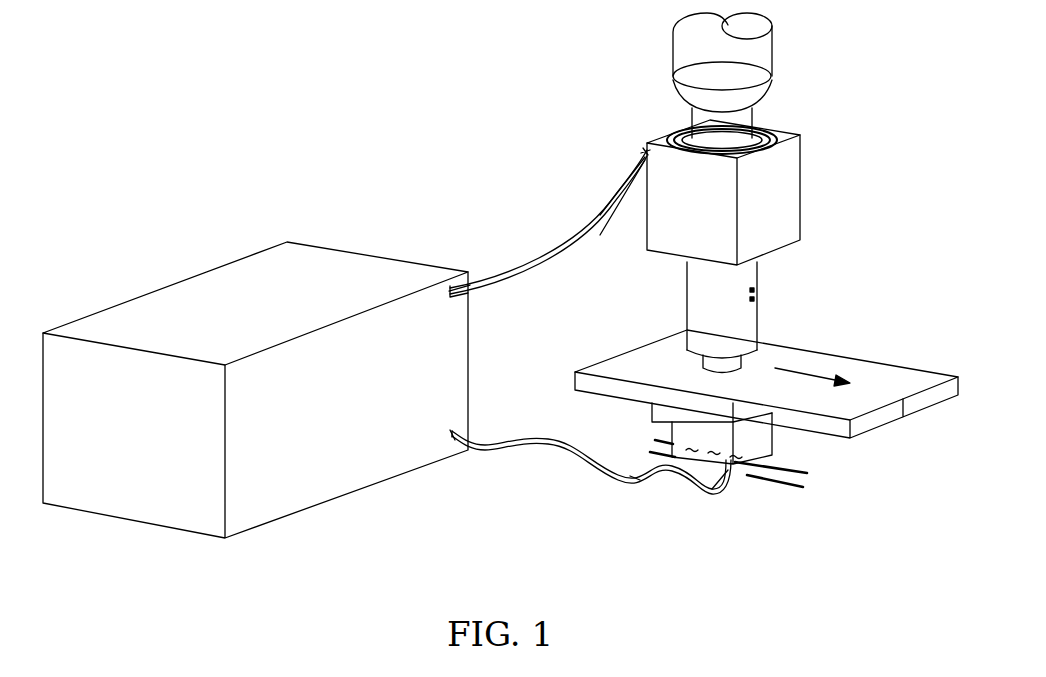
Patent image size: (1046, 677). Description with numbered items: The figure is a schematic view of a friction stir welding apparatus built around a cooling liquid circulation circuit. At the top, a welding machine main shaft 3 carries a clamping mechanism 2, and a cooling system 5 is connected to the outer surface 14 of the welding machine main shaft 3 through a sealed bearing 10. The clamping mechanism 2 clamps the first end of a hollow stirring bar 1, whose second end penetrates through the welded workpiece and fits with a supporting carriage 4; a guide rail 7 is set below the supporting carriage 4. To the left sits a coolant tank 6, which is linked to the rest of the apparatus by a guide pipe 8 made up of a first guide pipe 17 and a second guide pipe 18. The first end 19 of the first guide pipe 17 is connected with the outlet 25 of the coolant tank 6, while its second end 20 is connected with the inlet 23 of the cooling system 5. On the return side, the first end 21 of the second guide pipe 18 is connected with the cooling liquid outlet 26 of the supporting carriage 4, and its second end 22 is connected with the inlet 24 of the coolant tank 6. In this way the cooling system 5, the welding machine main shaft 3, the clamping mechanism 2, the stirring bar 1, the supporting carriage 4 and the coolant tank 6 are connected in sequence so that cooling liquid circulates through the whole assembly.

The stirring bar 1 is at (717, 370).
The clamping mechanism 2 is at (753, 333).
The welding machine main shaft 3 is at (677, 68).
The supporting carriage 4 is at (760, 442).
The cooling system 5 is at (775, 187).
The coolant tank 6 is at (268, 272).
The guide rail 7 is at (782, 487).
The guide pipe 8 is at (573, 460).
The sealed bearing 10 is at (770, 137).
The outer surface of the welding machine main shaft 14 is at (702, 118).
The first guide pipe 17 is at (560, 248).
The second guide pipe 18 is at (635, 478).
The first end of the first guide pipe 19 is at (450, 290).
The second end of the first guide pipe 20 is at (645, 152).
The first end of the second guide pipe 21 is at (725, 472).
The second end of the second guide pipe 22 is at (452, 432).
The inlet of the cooling system 23 is at (645, 160).
The inlet of the coolant tank 24 is at (452, 432).
The outlet of the coolant tank 25 is at (452, 298).
The cooling liquid outlet of the supporting carriage 26 is at (715, 470).